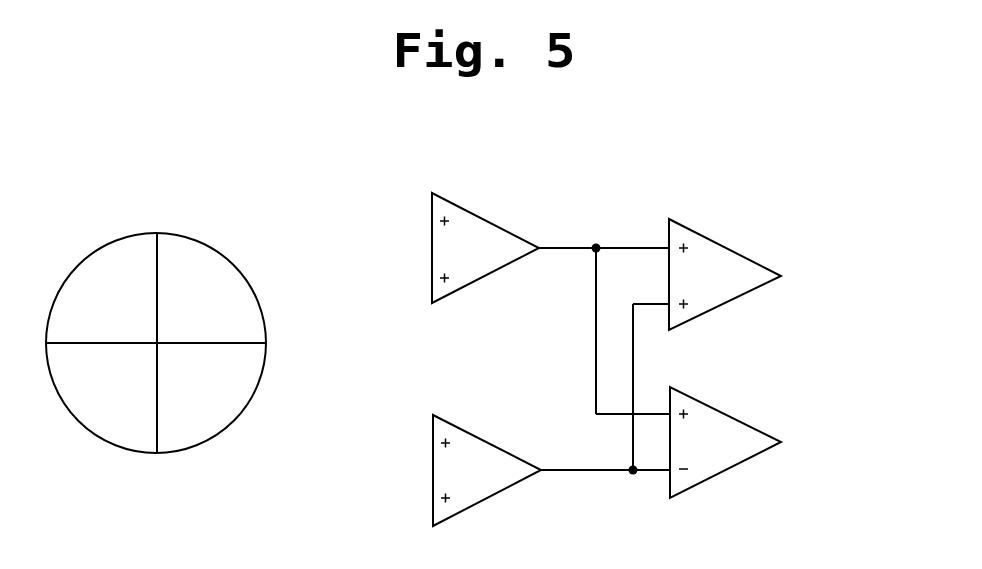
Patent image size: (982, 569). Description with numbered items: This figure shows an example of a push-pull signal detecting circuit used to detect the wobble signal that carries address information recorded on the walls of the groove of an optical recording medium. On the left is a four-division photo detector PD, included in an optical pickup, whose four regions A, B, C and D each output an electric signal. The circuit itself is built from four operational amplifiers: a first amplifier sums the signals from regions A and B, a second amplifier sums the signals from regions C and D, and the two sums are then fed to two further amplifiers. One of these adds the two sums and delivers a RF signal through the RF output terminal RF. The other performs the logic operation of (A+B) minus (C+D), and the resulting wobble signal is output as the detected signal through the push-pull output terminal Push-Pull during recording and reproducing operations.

The 4-division photo detector PD is at (156, 366).
The A region of the photo detector A is at (432, 221).
The B region of the photo detector B is at (432, 278).
The C region of the photo detector C is at (433, 443).
The D region of the photo detector D is at (433, 498).
The RF output terminal RF is at (781, 276).
The push-pull output terminal Push-Pull is at (781, 442).